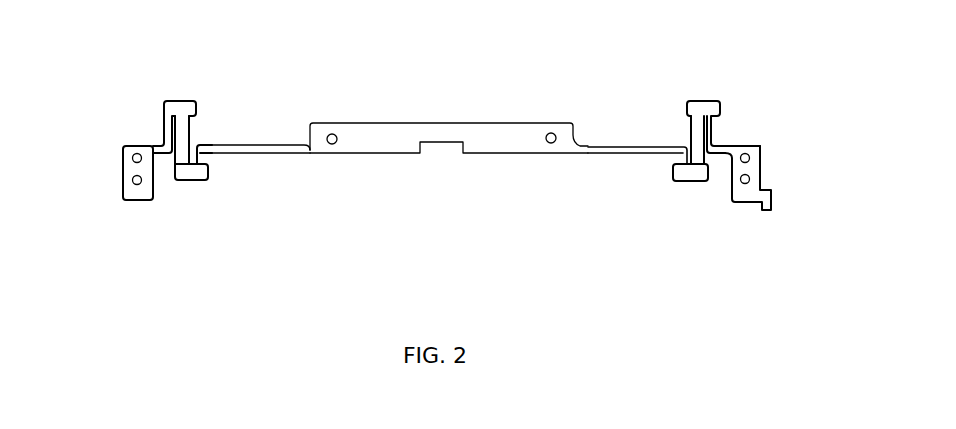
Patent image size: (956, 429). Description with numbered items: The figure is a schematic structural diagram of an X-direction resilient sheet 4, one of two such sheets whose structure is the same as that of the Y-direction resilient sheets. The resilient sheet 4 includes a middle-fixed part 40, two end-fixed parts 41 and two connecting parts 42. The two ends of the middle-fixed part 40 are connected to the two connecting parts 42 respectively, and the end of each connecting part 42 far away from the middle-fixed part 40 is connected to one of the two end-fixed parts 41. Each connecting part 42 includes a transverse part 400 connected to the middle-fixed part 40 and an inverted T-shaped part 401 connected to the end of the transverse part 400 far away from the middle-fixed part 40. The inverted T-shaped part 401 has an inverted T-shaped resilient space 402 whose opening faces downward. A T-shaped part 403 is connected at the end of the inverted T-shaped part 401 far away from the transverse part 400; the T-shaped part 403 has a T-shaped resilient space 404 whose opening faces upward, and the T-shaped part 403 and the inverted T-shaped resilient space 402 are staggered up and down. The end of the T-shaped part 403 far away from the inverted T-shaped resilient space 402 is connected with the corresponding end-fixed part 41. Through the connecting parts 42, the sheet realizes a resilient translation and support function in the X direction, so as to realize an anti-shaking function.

The X-direction resilient sheet 4 is at (457, 38).
The middle-fixed part 40 is at (391, 140).
The transverse part 400 is at (258, 150).
The end-fixed part 41 is at (128, 160).
The connecting part 42 is at (419, 211).
The inverted T-shaped part 401 is at (193, 181).
The inverted T-shaped resilient space 402 is at (225, 194).
The T-shaped part 403 is at (165, 111).
The T-shaped resilient space 404 is at (180, 122).